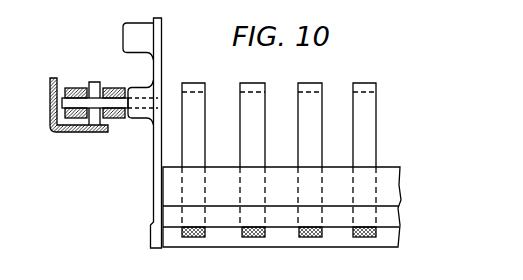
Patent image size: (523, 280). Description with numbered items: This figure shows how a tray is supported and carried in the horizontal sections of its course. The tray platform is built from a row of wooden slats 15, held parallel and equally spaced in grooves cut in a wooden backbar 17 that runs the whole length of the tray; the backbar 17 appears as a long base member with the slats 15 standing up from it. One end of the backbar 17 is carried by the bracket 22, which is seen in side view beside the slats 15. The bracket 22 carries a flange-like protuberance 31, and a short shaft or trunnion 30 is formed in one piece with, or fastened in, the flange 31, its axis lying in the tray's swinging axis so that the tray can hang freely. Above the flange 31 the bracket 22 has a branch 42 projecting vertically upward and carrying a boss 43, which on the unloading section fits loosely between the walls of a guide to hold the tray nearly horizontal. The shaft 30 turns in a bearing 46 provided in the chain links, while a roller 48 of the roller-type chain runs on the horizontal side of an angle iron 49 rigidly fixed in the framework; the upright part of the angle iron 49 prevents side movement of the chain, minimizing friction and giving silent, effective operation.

The wooden slats 15 is at (310, 83).
The wooden bar 17 is at (328, 238).
The bracket 22 is at (156, 168).
The shaft 30 is at (68, 102).
The flange-like protuberance 31 is at (139, 110).
The branch 42 is at (162, 72).
The boss 43 is at (140, 23).
The bearings 46 is at (77, 88).
The rollers 48 is at (96, 84).
The angle irons 49 is at (53, 124).